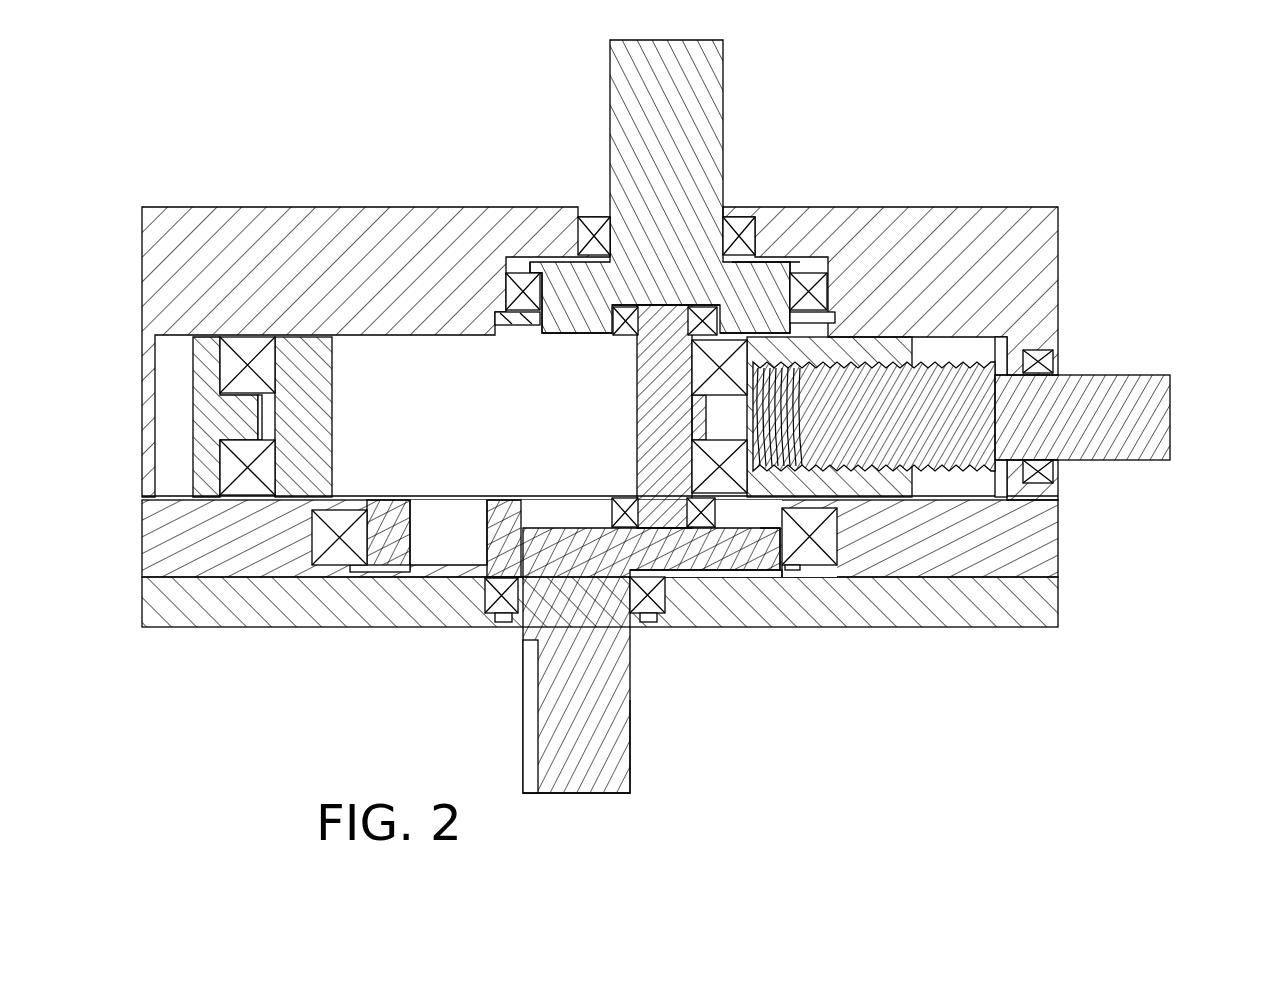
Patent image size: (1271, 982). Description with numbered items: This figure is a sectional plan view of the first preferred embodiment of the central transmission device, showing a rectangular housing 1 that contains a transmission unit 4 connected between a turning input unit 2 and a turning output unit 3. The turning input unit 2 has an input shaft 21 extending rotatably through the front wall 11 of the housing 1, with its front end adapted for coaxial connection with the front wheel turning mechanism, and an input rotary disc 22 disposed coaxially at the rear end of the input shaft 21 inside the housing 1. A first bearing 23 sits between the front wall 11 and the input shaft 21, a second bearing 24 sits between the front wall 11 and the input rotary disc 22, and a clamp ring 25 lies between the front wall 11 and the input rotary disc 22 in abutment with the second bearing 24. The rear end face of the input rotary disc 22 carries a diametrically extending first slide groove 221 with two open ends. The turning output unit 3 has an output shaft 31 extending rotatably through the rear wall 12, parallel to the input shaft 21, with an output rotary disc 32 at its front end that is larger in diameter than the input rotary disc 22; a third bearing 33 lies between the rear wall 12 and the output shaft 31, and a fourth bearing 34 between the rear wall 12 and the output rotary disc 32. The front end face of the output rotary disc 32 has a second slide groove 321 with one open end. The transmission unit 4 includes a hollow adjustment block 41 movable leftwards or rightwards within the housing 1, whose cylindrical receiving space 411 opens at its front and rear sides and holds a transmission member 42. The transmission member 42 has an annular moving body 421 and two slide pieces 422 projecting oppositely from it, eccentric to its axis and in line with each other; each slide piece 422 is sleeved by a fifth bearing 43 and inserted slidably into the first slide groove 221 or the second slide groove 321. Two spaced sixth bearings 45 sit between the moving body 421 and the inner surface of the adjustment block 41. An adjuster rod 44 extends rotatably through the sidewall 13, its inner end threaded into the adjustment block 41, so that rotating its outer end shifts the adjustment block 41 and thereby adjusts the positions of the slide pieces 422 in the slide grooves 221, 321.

The housing 1 is at (596, 398).
The turning input unit 2 is at (640, 173).
The turning output unit 3 is at (583, 646).
The transmission unit 4 is at (656, 404).
The front wall 11 is at (330, 240).
The rear wall 12 is at (870, 605).
The sidewall 13 is at (1062, 488).
The input shaft 21 is at (640, 75).
The input rotary disc 22 is at (717, 234).
The first slide groove 221 is at (745, 300).
The first bearing 23 is at (595, 235).
The second bearing 24 is at (520, 290).
The clamp ring 25 is at (500, 320).
The output shaft 31 is at (600, 765).
The output rotary disc 32 is at (602, 646).
The second slide groove 321 is at (762, 522).
The third bearing 33 is at (500, 598).
The fourth bearing 34 is at (333, 558).
The adjustment block 41 is at (170, 417).
The receiving space 411 is at (257, 418).
The transmission member 42 is at (572, 404).
The moving body 421 is at (300, 497).
The slide pieces 422 is at (668, 305).
The fifth bearings 43 is at (625, 318).
The adjuster rod 44 is at (1140, 412).
The sixth bearings 45 is at (230, 363).